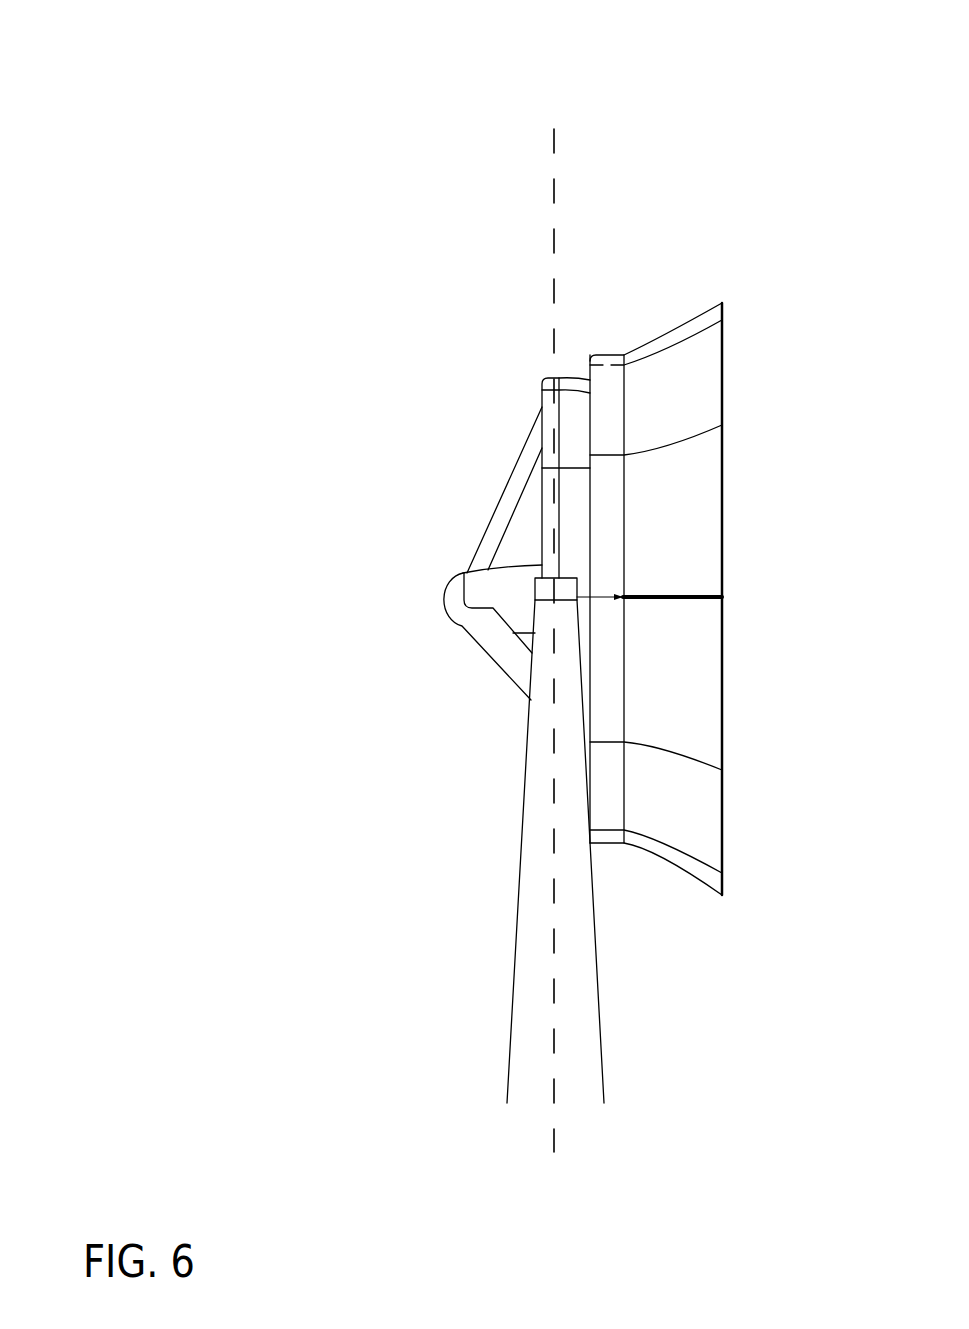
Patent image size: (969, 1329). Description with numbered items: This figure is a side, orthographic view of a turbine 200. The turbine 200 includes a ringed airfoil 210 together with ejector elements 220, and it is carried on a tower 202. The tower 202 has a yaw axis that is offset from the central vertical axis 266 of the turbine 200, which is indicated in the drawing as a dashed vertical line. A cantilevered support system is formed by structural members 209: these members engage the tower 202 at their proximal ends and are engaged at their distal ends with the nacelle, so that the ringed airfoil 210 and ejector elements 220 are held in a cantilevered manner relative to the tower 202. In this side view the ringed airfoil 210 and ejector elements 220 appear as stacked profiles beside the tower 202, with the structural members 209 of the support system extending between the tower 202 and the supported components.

The turbine 200 is at (112, 60).
The tower 202 is at (518, 972).
The structural members 209 is at (510, 648).
The ringed airfoil 210 is at (424, 747).
The ejector elements 220 is at (697, 330).
The central vertical axis 266 is at (553, 180).